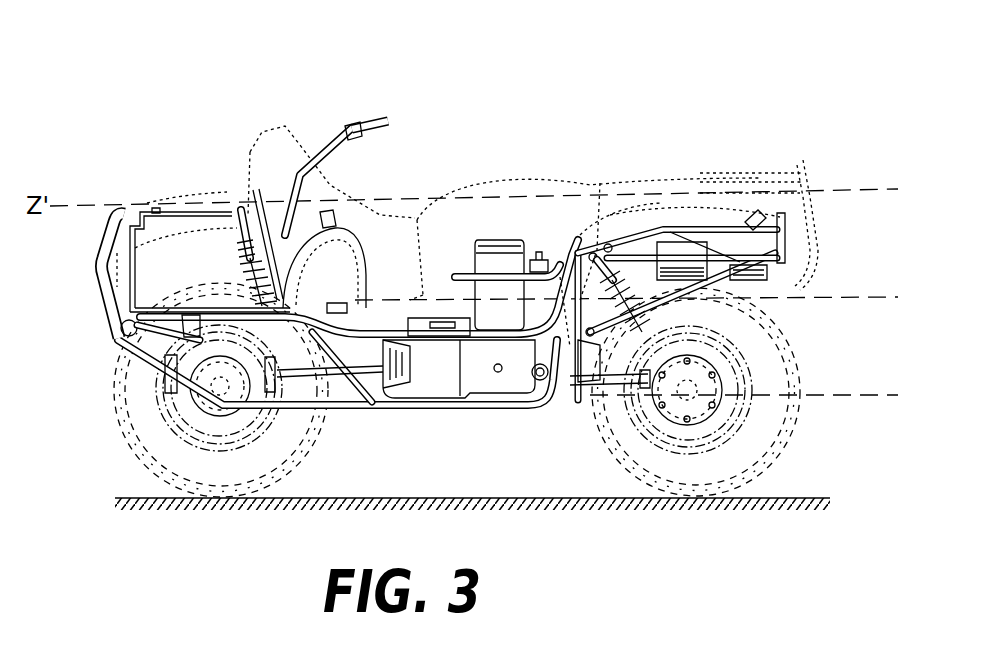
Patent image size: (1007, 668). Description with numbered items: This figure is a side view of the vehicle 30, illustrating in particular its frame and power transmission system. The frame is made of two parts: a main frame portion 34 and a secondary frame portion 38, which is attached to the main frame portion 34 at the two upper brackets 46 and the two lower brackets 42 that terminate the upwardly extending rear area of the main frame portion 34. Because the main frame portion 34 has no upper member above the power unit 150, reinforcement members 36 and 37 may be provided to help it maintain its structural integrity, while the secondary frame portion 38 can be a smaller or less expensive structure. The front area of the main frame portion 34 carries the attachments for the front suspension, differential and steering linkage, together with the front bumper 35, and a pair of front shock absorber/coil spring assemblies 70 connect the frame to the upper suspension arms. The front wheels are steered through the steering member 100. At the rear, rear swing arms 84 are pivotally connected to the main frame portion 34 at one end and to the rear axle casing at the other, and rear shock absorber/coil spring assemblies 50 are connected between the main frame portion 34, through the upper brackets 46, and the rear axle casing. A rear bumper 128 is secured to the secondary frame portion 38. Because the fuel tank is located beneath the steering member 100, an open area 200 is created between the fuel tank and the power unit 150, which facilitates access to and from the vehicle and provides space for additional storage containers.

The vehicle 30 is at (571, 89).
The main frame portion 34 is at (393, 308).
The front bumper 35 is at (100, 310).
The reinforcement member 36 is at (367, 407).
The reinforcement member 37 is at (233, 210).
The secondary frame portion 38 is at (695, 228).
The lower brackets 42 is at (575, 370).
The upper brackets 46 is at (598, 240).
The rear shock absorber/coil spring assemblies 50 is at (657, 334).
The front shock absorber/coil spring assemblies 70 is at (205, 340).
The rear swing arms 84 is at (597, 415).
The steering member 100 is at (352, 125).
The rear bumper 128 is at (810, 180).
The power unit 150 is at (142, 212).
The open area 200 is at (386, 222).